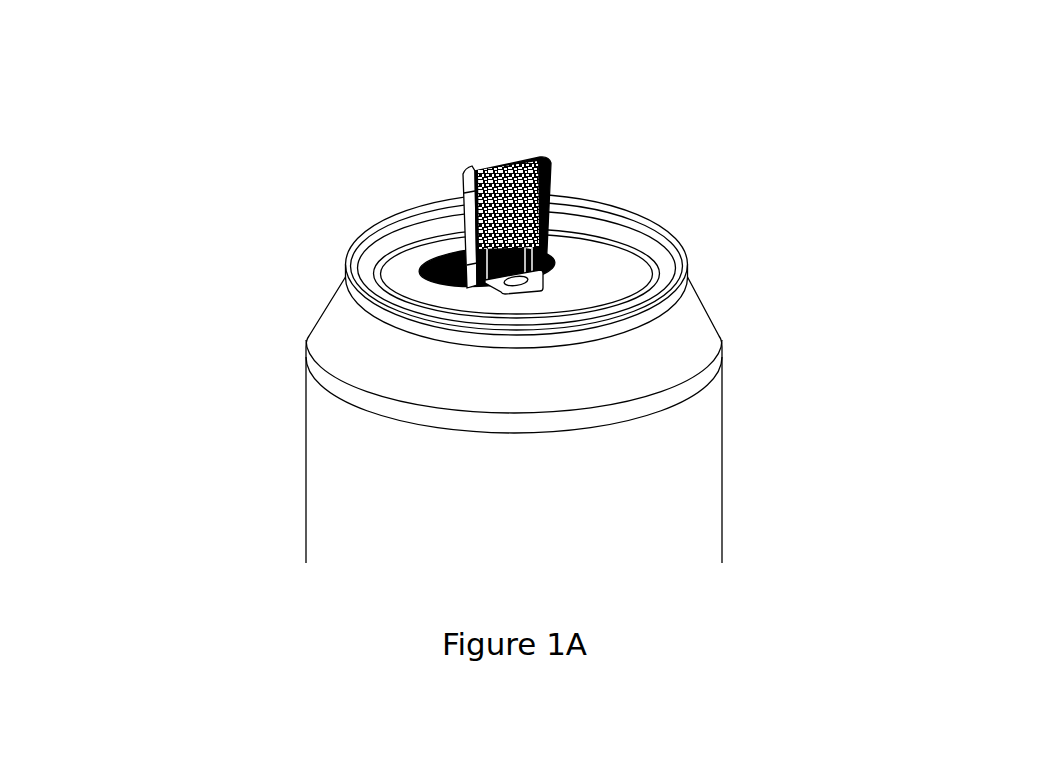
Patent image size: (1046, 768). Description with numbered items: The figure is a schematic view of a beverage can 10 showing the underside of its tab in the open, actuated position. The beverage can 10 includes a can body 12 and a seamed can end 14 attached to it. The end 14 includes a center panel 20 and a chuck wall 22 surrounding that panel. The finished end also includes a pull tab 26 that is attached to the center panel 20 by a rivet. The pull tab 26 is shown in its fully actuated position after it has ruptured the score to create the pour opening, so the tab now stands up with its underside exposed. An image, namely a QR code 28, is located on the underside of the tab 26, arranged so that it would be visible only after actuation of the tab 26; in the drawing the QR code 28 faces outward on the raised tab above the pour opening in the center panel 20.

The beverage can 10 is at (469, 295).
The can body 12 is at (304, 432).
The seamed can end 14 is at (343, 257).
The center panel 20 is at (592, 273).
The chuck wall 22 is at (560, 218).
The pull tab 26 is at (449, 160).
The QR code 28 is at (508, 177).